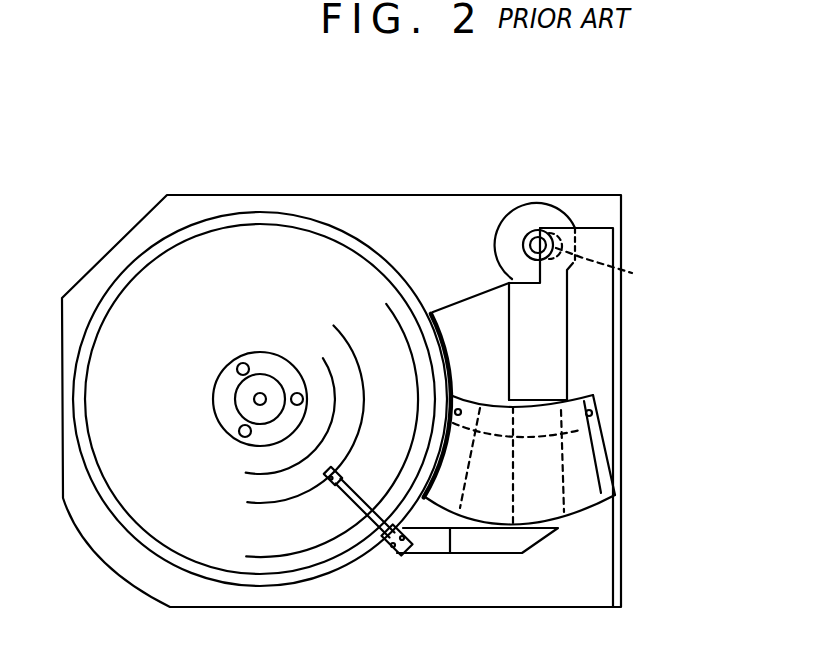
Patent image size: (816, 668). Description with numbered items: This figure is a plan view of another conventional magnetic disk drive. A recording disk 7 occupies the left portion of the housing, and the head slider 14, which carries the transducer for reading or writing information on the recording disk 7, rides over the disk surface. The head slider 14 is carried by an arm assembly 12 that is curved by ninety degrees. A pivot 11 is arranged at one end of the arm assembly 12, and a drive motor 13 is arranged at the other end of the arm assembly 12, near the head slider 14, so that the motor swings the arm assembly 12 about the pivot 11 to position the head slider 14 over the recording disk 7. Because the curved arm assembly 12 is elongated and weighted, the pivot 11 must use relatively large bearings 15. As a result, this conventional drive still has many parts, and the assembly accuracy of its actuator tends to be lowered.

The recording disk 7 is at (150, 510).
The pivot 11 is at (530, 231).
The arm assembly 12 is at (560, 340).
The drive motor 13 is at (602, 470).
The head slider 14 is at (329, 485).
The bearings 15 is at (613, 269).